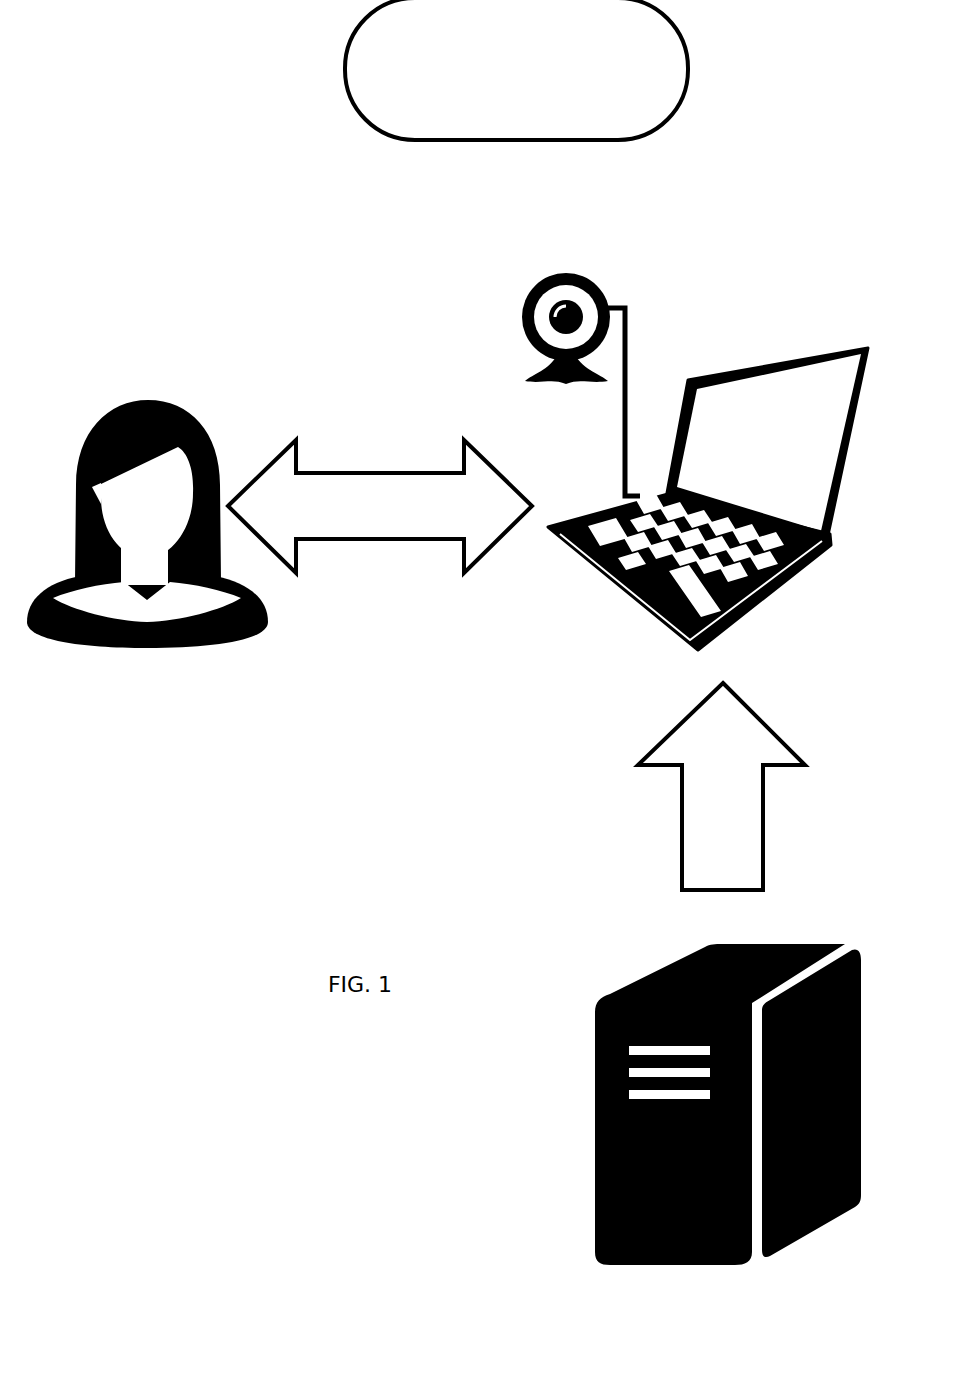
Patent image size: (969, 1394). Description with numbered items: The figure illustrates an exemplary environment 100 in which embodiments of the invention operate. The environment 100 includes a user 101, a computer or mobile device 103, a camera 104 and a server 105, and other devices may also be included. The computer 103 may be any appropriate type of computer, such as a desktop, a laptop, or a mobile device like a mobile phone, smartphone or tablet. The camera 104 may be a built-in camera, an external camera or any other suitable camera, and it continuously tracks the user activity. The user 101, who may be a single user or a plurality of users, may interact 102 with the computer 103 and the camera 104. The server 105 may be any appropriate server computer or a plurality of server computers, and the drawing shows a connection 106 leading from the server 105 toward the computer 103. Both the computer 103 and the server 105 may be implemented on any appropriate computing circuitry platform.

The environment 100 is at (516, 70).
The user 101 is at (147, 503).
The interaction 102 is at (380, 506).
The computer or mobile device 103 is at (708, 485).
The camera 104 is at (581, 361).
The server 105 is at (728, 1083).
The network connection 106 is at (721, 786).